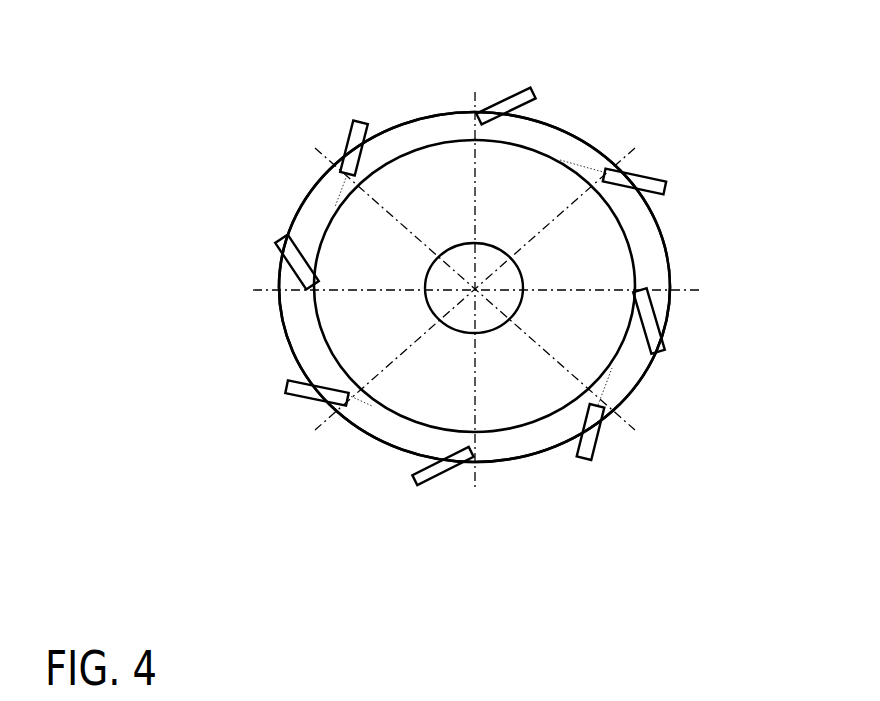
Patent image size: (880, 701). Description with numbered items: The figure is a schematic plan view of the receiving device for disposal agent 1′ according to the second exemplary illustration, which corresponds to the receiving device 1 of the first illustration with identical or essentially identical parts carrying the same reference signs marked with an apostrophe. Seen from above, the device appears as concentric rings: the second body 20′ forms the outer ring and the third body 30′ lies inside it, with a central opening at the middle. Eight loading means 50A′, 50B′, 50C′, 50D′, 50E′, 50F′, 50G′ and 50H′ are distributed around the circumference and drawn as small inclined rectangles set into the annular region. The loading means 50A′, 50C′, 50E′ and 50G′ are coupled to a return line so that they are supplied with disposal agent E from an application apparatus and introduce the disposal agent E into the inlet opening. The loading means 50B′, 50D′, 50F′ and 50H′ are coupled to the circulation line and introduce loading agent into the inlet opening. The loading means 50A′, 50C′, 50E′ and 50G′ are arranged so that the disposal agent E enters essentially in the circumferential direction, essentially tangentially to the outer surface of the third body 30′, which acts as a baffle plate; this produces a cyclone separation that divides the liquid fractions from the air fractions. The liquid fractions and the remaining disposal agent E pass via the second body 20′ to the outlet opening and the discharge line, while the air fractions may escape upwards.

The receiving device for disposal agent 1′ is at (256, 120).
The receiving device for disposal agent 1 is at (562, 143).
The second body 20′ is at (297, 207).
The third body 30′ is at (318, 228).
The loading means 50A′ is at (653, 182).
The loading means 50B′ is at (677, 335).
The loading means 50C′ is at (585, 449).
The loading means 50D′ is at (413, 482).
The loading means 50E′ is at (292, 386).
The loading means 50F′ is at (257, 262).
The loading means 50G′ is at (343, 144).
The loading means 50H′ is at (541, 84).
The disposal agent E is at (607, 385).